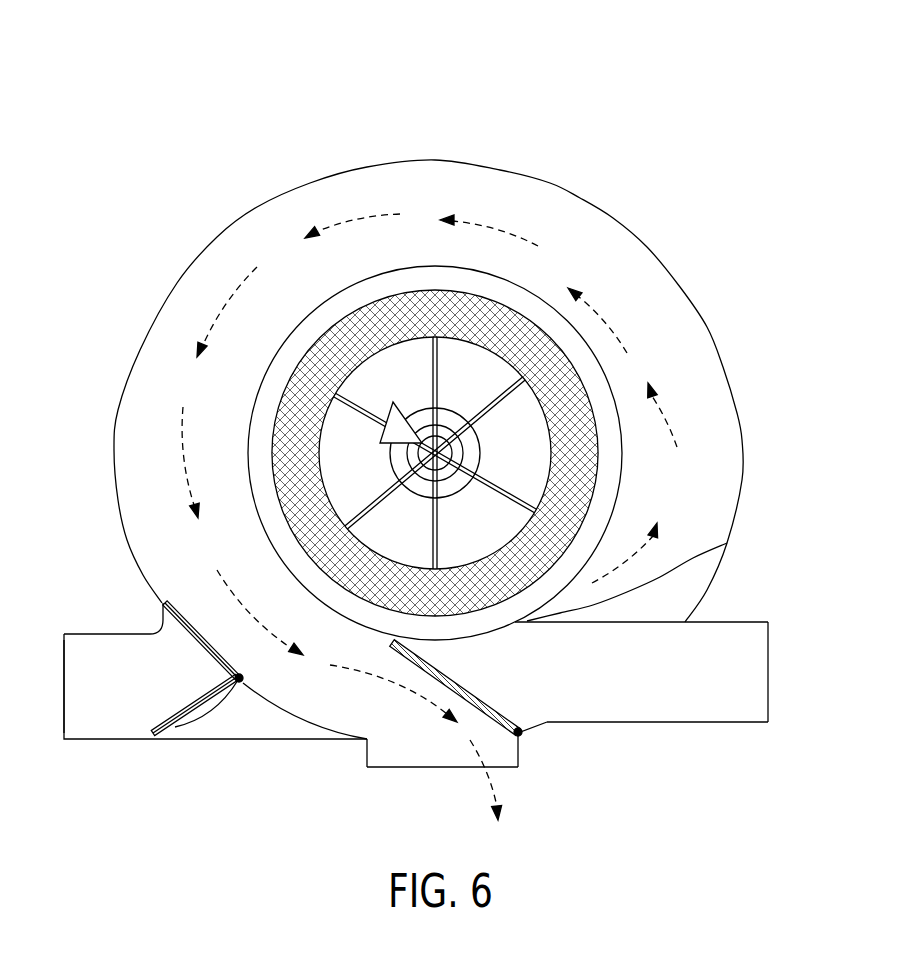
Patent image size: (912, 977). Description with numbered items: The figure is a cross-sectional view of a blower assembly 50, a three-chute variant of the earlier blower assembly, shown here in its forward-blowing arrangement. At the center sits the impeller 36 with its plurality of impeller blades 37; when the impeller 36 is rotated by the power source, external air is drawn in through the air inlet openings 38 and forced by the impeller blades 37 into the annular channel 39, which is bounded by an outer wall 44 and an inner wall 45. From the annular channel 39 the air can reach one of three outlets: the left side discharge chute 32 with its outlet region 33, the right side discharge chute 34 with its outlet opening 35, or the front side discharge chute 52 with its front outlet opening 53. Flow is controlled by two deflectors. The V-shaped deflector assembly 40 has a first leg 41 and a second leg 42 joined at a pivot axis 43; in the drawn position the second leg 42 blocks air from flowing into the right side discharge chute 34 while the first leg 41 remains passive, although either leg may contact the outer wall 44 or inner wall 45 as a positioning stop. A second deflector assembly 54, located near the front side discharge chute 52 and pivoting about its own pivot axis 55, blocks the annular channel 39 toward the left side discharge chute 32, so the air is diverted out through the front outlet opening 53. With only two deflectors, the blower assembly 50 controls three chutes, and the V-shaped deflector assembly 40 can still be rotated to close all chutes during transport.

The blower assembly 50 is at (92, 78).
The outer wall 44 is at (118, 403).
The inner wall 45 is at (253, 408).
The air inlet openings 38 is at (505, 332).
The impeller blades 37 is at (440, 388).
The impeller 36 is at (418, 417).
The annular channel 39 is at (690, 333).
The right side discharge chute 34 is at (92, 634).
The outlet opening 35 is at (63, 673).
The second leg 42 is at (193, 642).
The first leg 41 is at (175, 730).
The pivot axis 43 is at (244, 679).
The V-shaped deflector assembly 40 is at (222, 717).
The front side discharge chute 52 is at (367, 767).
The front outlet opening 53 is at (428, 767).
The second deflector assembly 54 is at (463, 685).
The pivot axis 55 is at (522, 740).
The left side discharge chute 32 is at (735, 622).
The second outlet 33 is at (768, 663).